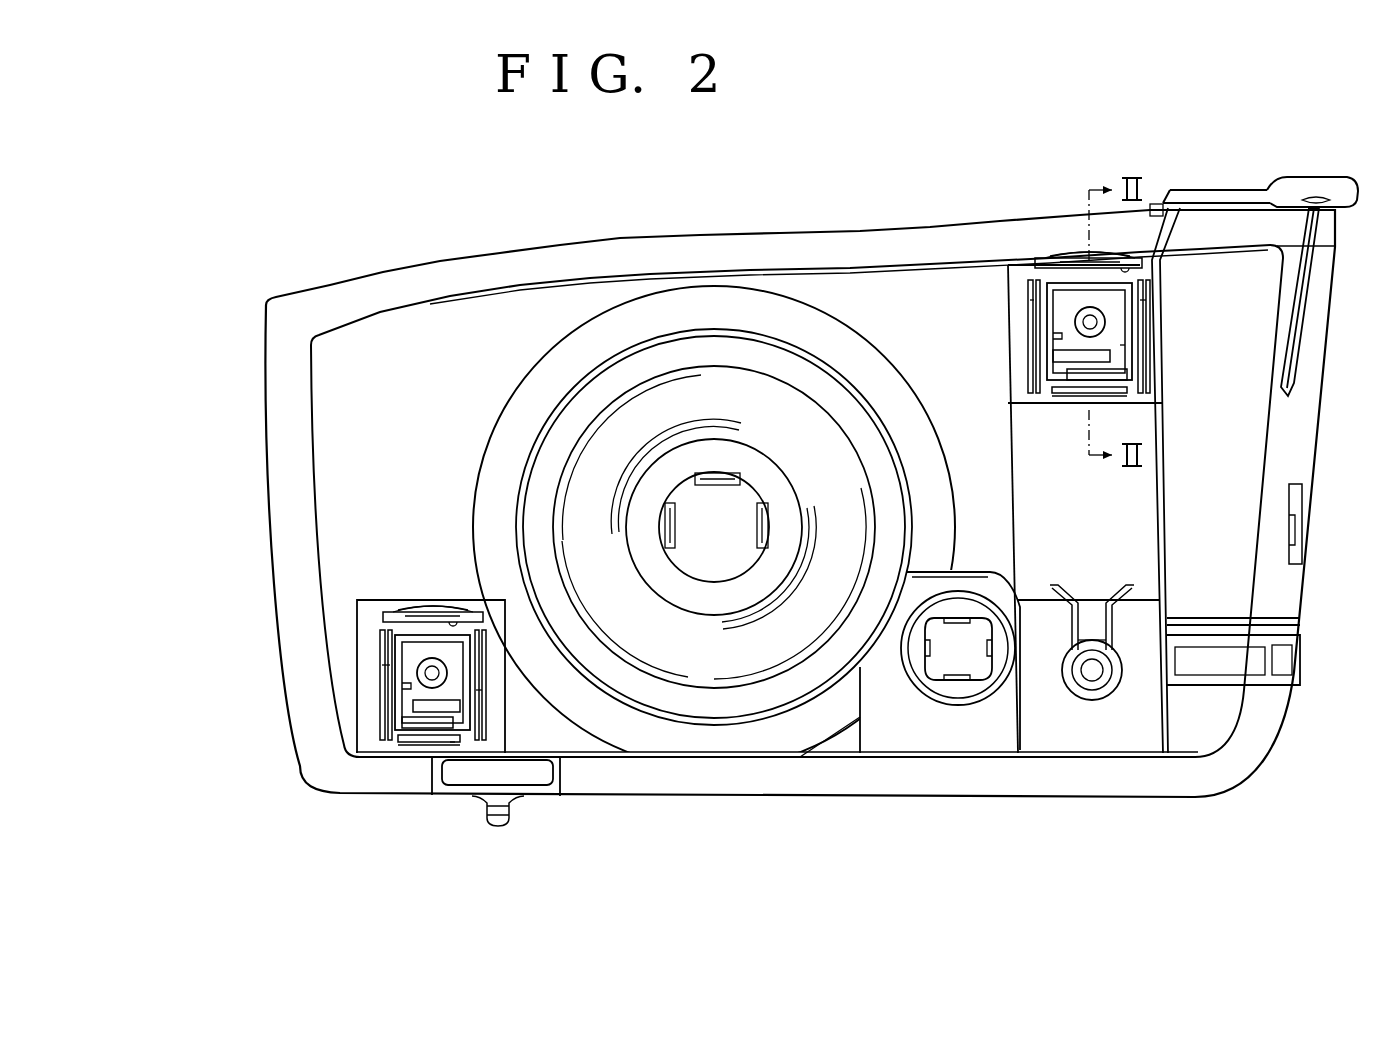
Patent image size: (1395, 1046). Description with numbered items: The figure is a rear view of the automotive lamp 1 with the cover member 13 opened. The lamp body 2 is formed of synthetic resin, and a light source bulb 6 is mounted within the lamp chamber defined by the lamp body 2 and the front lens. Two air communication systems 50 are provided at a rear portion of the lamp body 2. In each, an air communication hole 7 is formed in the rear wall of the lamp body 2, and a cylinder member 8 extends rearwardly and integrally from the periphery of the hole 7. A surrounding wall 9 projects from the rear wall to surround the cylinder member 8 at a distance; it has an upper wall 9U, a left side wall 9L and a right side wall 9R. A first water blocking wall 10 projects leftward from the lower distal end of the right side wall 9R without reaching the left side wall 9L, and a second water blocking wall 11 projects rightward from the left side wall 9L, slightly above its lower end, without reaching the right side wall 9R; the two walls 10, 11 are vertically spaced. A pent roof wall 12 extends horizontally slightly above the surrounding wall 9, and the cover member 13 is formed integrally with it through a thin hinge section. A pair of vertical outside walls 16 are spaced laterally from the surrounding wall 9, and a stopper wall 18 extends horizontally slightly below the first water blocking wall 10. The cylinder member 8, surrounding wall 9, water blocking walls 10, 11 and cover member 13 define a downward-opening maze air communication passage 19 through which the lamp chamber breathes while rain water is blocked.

The automotive lamp 1 is at (786, 217).
The lamp body 2 is at (417, 333).
The light source bulb 6 is at (703, 512).
The air communication hole 7 is at (1084, 325).
The cylinder member 8 is at (1068, 292).
The surrounding wall 9 is at (1142, 310).
The upper side wall of the surrounding wall 9U is at (1082, 266).
The left side wall 9L is at (1032, 292).
The right side wall 9R is at (1146, 303).
The first water blocking wall 10 is at (1076, 396).
The second water blocking wall 11 is at (1122, 348).
The pent roof wall 12 is at (1096, 274).
The cover member 13 is at (1088, 257).
The outside walls 16 is at (1032, 360).
The stopper wall 18 is at (1110, 393).
The maze air communication passage 19 is at (1058, 337).
The air communication system 50 is at (1008, 272).